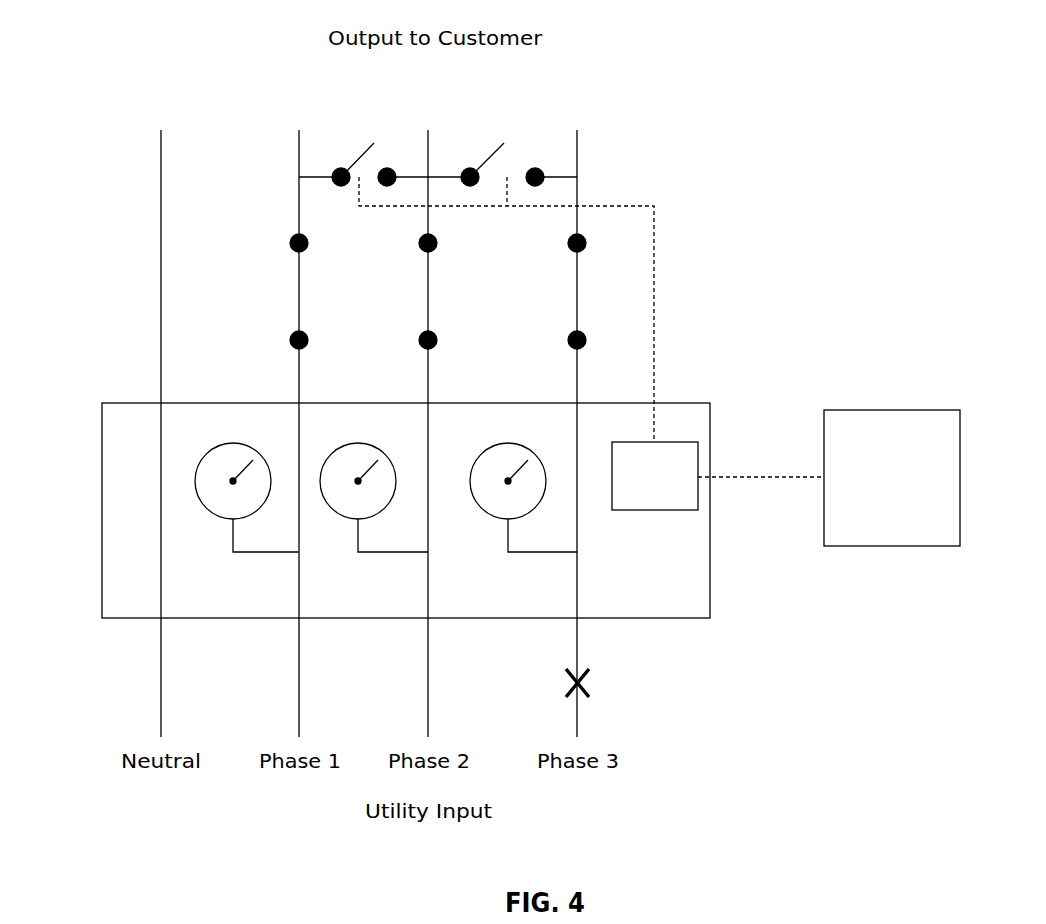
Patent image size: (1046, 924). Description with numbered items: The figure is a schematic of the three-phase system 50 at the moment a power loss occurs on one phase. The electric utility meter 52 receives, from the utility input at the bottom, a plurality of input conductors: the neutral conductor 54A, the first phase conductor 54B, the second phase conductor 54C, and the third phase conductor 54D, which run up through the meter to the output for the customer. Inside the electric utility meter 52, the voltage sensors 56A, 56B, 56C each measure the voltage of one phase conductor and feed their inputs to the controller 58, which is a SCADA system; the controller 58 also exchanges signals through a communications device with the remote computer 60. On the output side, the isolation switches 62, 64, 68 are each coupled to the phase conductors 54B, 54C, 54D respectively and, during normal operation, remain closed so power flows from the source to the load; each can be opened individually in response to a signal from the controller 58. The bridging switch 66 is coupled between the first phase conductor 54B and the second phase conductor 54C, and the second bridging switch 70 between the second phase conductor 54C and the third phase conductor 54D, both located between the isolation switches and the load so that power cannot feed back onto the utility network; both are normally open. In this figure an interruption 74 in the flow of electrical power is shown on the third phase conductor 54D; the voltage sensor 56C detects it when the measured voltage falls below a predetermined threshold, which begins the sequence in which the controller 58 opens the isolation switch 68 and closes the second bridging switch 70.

The three-phase system 50 is at (767, 125).
The electric utility meter 52 is at (102, 522).
The neutral conductor 54A is at (161, 690).
The first phase conductor 54B is at (299, 705).
The second phase conductor 54C is at (428, 710).
The third phase conductor 54D is at (577, 715).
The voltage sensor 56A is at (198, 468).
The voltage sensor 56B is at (341, 510).
The voltage sensor 56C is at (470, 468).
The controller 58 is at (633, 512).
The remote computer 60 is at (928, 548).
The first isolation switch 62 is at (286, 313).
The second isolation switch 64 is at (412, 303).
The bridging switch 66 is at (366, 132).
The third isolation switch 68 is at (562, 306).
The second bridging switch 70 is at (523, 138).
The interruption 74 is at (590, 683).